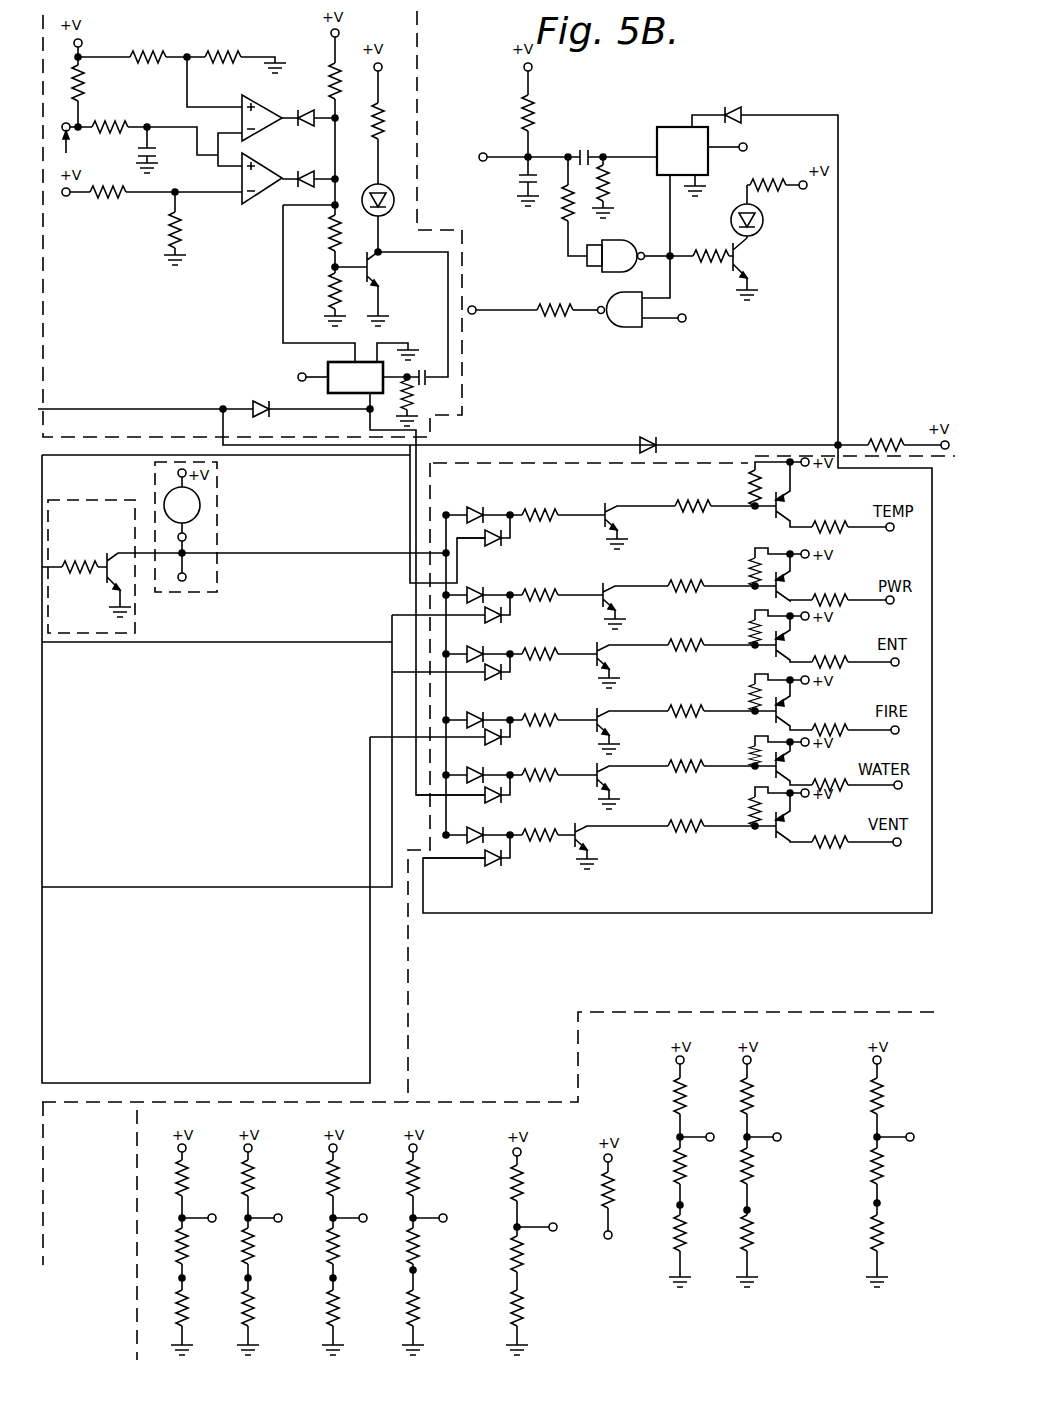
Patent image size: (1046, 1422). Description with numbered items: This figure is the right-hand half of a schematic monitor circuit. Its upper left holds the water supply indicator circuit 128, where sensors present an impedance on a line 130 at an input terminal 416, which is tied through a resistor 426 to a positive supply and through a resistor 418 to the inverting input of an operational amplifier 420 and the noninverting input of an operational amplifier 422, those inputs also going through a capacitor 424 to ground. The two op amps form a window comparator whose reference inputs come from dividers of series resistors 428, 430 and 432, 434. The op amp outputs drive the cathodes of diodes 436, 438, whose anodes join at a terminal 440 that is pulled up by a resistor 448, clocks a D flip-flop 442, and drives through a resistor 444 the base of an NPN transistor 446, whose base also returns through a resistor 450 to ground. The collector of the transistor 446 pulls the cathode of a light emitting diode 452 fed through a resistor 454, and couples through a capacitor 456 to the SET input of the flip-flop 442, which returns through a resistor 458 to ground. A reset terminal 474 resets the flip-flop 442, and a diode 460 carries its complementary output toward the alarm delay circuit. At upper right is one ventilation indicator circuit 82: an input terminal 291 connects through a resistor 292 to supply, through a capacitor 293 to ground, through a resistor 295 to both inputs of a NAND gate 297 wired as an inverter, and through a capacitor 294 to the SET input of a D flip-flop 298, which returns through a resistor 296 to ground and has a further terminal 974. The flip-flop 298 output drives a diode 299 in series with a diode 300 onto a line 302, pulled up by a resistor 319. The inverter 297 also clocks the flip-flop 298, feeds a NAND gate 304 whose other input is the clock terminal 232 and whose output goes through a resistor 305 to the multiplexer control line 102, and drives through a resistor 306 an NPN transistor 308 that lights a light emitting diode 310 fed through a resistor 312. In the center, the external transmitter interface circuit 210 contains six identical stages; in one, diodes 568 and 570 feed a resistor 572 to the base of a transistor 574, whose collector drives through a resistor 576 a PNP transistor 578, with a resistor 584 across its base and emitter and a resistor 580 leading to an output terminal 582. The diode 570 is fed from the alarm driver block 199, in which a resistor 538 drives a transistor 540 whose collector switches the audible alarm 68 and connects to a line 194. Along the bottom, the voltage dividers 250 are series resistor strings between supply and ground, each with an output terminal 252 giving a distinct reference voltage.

The water supply indicator circuit 128 is at (198, 26).
The ventilation indicator circuit 82 is at (458, 57).
The resistor 428 is at (141, 45).
The resistor 430 is at (244, 50).
The diode 436 is at (276, 96).
The operational amplifier 420 is at (241, 104).
The resistor 426 is at (96, 96).
The input terminal 416 is at (60, 113).
The resistor 418 is at (112, 115).
The line 130 is at (87, 145).
The capacitor 424 is at (165, 159).
The resistor 432 is at (152, 205).
The resistor 434 is at (190, 228).
The operational amplifier 422 is at (247, 196).
The resistor 448 is at (353, 121).
The resistor 454 is at (354, 120).
The diode 438 is at (307, 166).
The terminal 440 is at (338, 178).
The resistor 444 is at (315, 236).
The light emitting diode 452 is at (372, 206).
The NPN transistor 446 is at (377, 289).
The resistor 450 is at (318, 296).
The reset terminal 474 is at (296, 372).
The diode 460 is at (282, 379).
The D flip-flop 442 is at (373, 376).
The resistor 458 is at (422, 401).
The capacitor 456 is at (430, 372).
The input terminal 291 is at (492, 142).
The resistor 292 is at (547, 114).
The capacitor 293 is at (503, 181).
The capacitor 294 is at (579, 144).
The resistor 295 is at (562, 212).
The resistor 296 is at (619, 187).
The NAND gate 297 is at (628, 243).
The D flip-flop 298 is at (690, 164).
The diode 299 is at (775, 263).
The output terminal 974 is at (748, 144).
The resistor 312 is at (773, 172).
The light emitting diode 310 is at (766, 211).
The resistor 306 is at (701, 244).
The NPN transistor 308 is at (759, 269).
The resistor 305 is at (561, 297).
The control input line 102 is at (492, 312).
The NAND gate 304 is at (637, 320).
The terminal 232 is at (675, 331).
The line 302 is at (502, 444).
The diode 300 is at (641, 429).
The resistor 319 is at (893, 429).
The external transmitter interface circuit 210 is at (520, 930).
The diode 570 is at (478, 500).
The resistor 572 is at (557, 500).
The transistor 574 is at (640, 526).
The resistor 576 is at (717, 494).
The resistor 584 is at (753, 484).
The PNP transistor 578 is at (798, 494).
The resistor 580 is at (849, 518).
The output terminal 582 is at (881, 541).
The diode 568 is at (483, 547).
The transistor block 199 is at (138, 621).
The resistor 538 is at (74, 552).
The transistor 540 is at (110, 547).
The audible alarm 68 is at (215, 526).
The line 194 is at (185, 562).
The voltage dividers 250 is at (516, 1064).
The output terminal 252 is at (222, 1200).